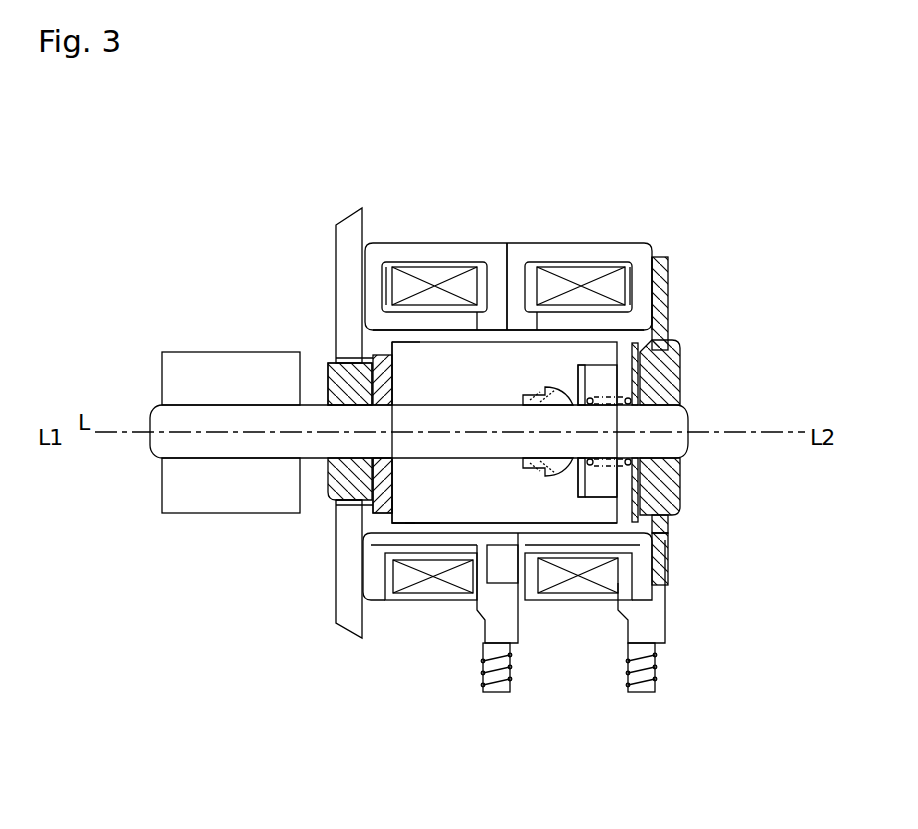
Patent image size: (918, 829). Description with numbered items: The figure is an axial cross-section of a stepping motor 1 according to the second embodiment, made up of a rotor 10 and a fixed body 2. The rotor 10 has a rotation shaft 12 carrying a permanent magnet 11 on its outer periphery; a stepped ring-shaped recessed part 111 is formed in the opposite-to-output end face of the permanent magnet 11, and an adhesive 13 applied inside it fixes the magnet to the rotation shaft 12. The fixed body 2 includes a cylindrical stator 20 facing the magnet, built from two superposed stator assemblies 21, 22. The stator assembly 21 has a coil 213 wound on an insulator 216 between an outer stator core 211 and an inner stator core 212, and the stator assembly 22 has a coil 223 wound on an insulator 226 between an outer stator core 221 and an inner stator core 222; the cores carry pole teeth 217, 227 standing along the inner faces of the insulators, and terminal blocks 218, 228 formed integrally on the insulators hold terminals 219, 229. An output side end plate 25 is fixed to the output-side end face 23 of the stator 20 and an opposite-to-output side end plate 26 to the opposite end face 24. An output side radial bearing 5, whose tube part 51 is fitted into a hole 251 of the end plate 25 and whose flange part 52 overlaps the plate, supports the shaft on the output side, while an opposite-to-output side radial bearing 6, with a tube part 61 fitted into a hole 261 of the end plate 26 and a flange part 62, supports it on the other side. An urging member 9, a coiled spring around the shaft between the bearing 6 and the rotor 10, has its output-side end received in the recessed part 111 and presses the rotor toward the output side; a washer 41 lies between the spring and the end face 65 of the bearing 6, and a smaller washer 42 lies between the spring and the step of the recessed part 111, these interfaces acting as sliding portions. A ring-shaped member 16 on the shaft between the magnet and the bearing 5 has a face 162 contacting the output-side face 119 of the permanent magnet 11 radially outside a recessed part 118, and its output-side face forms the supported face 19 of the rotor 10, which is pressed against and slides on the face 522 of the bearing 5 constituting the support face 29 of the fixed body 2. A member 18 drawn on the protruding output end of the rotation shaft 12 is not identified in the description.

The stepping motor 1 is at (333, 166).
The fixed body 2 is at (330, 208).
The output side radial bearing 5 is at (331, 396).
The opposite-to-output side radial bearing 6 is at (668, 378).
The urging member 9 is at (588, 494).
The rotor 10 is at (240, 668).
The permanent magnet 11 is at (413, 513).
The rotation shaft 12 is at (248, 447).
The adhesive 13 is at (530, 398).
The ring-shaped member 16 is at (395, 507).
The output member 18 is at (165, 487).
The supported face 19 is at (418, 512).
The stator 20 is at (590, 182).
The stator assembly 21 is at (500, 220).
The stator assembly 22 is at (643, 220).
The end face 23 is at (497, 285).
The end face 24 is at (700, 282).
The output side end plate 25 is at (346, 622).
The opposite-to-output side end plate 26 is at (662, 566).
The support face 29 is at (336, 505).
The washer 41 is at (660, 331).
The washer 42 is at (580, 384).
The tube part 51 is at (330, 371).
The flange part 52 is at (378, 352).
The tube part 61 is at (650, 503).
The flange part 62 is at (670, 518).
The end face 65 is at (668, 388).
The ring-shaped recessed part 111 is at (596, 490).
The recessed part 118 is at (401, 380).
The face 119 is at (397, 367).
The face 162 is at (408, 370).
The stator core 211 is at (410, 247).
The stator core 212 is at (392, 263).
The coil 213 is at (406, 287).
The insulator 216 is at (386, 298).
The pole teeth 217 is at (432, 323).
The terminal block 218 is at (485, 641).
The terminal 219 is at (500, 694).
The stator core 221 is at (600, 248).
The stator core 222 is at (602, 265).
The coil 223 is at (612, 285).
The insulator 226 is at (630, 296).
The pole teeth 227 is at (553, 323).
The terminal block 228 is at (627, 641).
The terminal 229 is at (648, 694).
The hole 251 is at (348, 360).
The hole 261 is at (667, 540).
The face 522 is at (310, 535).